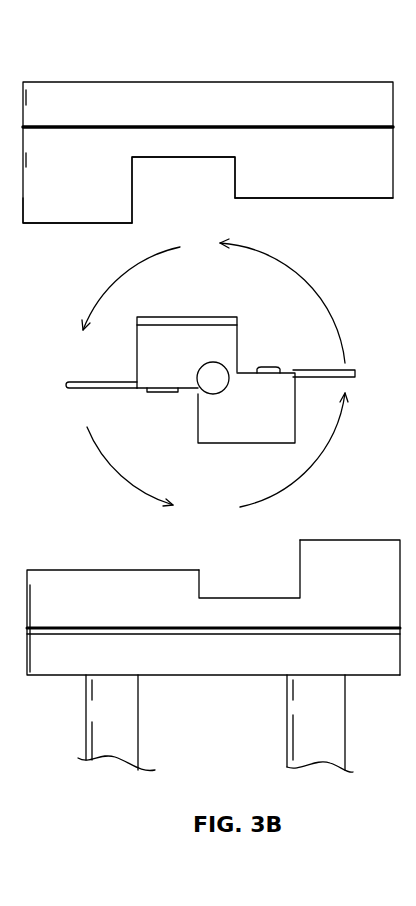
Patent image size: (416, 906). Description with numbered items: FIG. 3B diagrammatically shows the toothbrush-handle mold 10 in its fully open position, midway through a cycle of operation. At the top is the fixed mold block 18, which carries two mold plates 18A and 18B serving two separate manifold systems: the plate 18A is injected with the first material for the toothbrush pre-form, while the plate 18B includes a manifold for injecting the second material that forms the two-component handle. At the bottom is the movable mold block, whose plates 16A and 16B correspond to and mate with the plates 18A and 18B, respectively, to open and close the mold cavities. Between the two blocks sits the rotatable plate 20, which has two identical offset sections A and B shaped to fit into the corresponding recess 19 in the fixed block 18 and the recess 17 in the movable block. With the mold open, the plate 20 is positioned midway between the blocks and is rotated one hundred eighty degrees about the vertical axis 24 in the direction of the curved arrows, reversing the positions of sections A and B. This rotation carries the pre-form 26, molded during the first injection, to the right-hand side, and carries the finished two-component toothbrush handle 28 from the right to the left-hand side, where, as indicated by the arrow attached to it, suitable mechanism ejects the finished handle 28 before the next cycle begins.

The die assembly 10 is at (409, 353).
The mold plate 16A is at (107, 565).
The mold plate 16B is at (345, 538).
The recess 17 is at (257, 595).
The fixed mold block 18 is at (185, 103).
The mold plate 18A is at (68, 208).
The mold plate 18B is at (315, 191).
The recess 19 is at (172, 158).
The rotatable plate 20 is at (230, 330).
The vertical axis 24 is at (197, 392).
The pre-form 26 is at (313, 370).
The finished two-component toothbrush handle 28 is at (77, 372).